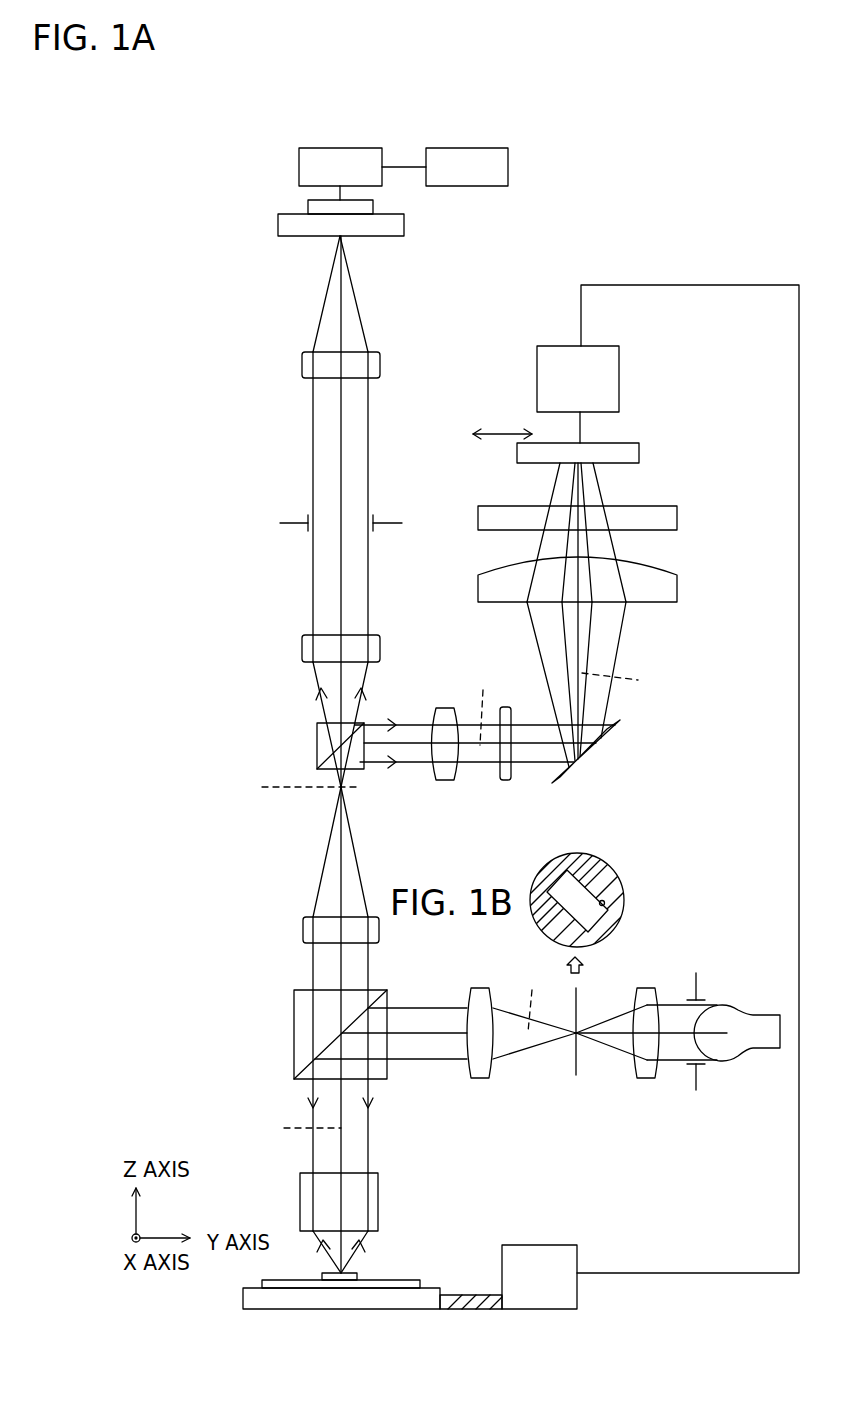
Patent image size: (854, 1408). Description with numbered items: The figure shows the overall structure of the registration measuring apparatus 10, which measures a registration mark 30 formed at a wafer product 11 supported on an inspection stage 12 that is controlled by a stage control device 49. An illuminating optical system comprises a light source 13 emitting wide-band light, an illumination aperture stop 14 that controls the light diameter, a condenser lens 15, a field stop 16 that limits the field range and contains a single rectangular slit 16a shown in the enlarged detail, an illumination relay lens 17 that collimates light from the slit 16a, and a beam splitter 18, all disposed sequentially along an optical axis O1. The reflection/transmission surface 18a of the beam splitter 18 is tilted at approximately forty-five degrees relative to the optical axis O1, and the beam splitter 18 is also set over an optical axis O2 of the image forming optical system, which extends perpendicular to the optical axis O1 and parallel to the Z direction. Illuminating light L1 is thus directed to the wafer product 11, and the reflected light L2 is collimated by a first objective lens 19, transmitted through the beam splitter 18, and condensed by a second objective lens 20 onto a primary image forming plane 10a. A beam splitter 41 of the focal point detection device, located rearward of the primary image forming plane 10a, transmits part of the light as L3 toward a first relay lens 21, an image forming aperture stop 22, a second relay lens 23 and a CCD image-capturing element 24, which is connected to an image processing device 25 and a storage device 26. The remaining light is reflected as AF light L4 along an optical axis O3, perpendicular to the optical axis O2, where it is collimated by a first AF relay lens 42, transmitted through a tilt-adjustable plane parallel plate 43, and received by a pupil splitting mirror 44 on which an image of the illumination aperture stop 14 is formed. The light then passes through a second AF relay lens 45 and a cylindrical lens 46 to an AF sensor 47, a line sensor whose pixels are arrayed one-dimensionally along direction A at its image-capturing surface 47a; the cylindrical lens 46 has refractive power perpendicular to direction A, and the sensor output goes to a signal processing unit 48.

In FIG. 1A, the registration measuring apparatus 10 is at (485, 673).
In FIG. 1A, the primary image forming plane 10a is at (279, 803).
In FIG. 1A, the wafer product 11 is at (422, 1285).
In FIG. 1A, the inspection stage 12 is at (315, 1300).
In FIG. 1A, the light source 13 is at (760, 1050).
In FIG. 1A, the illumination aperture stop 14 is at (697, 974).
In FIG. 1A, the condenser lens 15 is at (645, 1078).
In FIG. 1A, the field stop 16 is at (576, 1062).
In FIG. 1B, the field stop 16 is at (592, 857).
In FIG. 1B, the slit 16a is at (575, 905).
In FIG. 1A, the illumination relay lens 17 is at (482, 1078).
In FIG. 1A, the beam splitter 18 is at (294, 1022).
In FIG. 1A, the reflection/transmission surface 18a is at (362, 1013).
In FIG. 1A, the first objective lens 19 is at (378, 1198).
In FIG. 1A, the second objective lens 20 is at (303, 929).
In FIG. 1A, the first relay lens 21 is at (302, 648).
In FIG. 1A, the image forming aperture stop 22 is at (292, 523).
In FIG. 1A, the second relay lens 23 is at (302, 366).
In FIG. 1A, the CCD image-capturing element 24 is at (278, 223).
In FIG. 1A, the image processing device 25 is at (299, 167).
In FIG. 1A, the storage device 26 is at (508, 167).
In FIG. 1A, the registration mark 30 is at (357, 1276).
In FIG. 1A, the beam splitter 41 is at (317, 745).
In FIG. 1A, the first AF relay lens 42 is at (444, 780).
In FIG. 1A, the plane parallel plate 43 is at (505, 780).
In FIG. 1A, the pupil splitting mirror 44 is at (583, 752).
In FIG. 1A, the second AF relay lens 45 is at (677, 587).
In FIG. 1A, the cylindrical lens 46 is at (677, 518).
In FIG. 1A, the AF sensor 47 is at (639, 452).
In FIG. 1A, the image-capturing surface 47a is at (529, 464).
In FIG. 1A, the signal processing unit 48 is at (619, 373).
In FIG. 1A, the stage control device 49 is at (543, 1300).
In FIG. 1A, the illuminating light L1 is at (387, 1062).
In FIG. 1A, the reflected light L2 is at (320, 1254).
In FIG. 1A, the transmitted light L3 is at (319, 693).
In FIG. 1A, the AF light L4 is at (485, 755).
In FIG. 1A, the optical axis O1 is at (529, 999).
In FIG. 1A, the optical axis O2 is at (294, 1130).
In FIG. 1A, the optical axis O3 is at (568, 707).
In FIG. 1A, the pixel array direction A is at (502, 424).